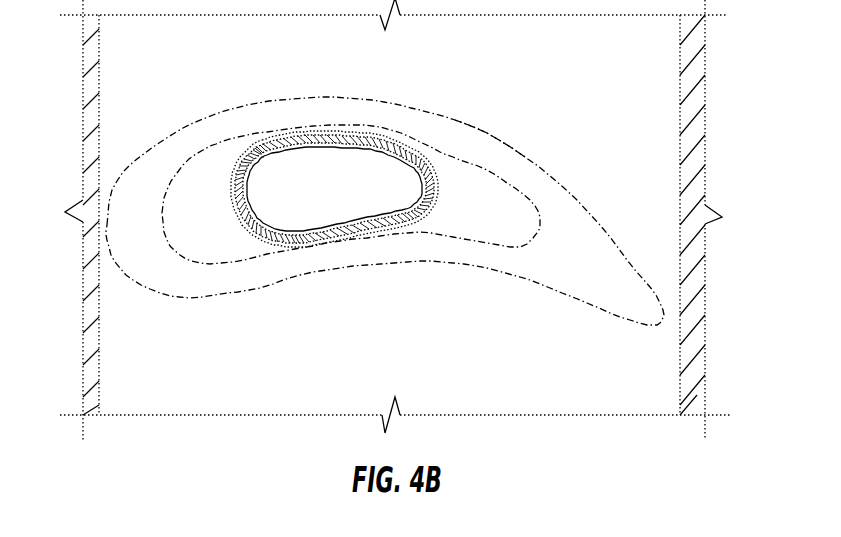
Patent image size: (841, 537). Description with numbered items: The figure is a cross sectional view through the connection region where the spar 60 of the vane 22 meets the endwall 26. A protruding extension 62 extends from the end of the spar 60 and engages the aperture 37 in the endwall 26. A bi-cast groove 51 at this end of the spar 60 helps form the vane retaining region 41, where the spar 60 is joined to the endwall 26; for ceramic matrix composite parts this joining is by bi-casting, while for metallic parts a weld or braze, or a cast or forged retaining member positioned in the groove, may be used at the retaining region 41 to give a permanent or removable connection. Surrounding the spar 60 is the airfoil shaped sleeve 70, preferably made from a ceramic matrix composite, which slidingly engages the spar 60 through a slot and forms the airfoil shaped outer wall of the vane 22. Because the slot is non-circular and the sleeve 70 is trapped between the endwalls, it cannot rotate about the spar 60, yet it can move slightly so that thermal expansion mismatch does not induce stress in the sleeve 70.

The vane 22 is at (298, 276).
The second endwall 26 is at (705, 93).
The aperture 37 is at (380, 140).
The retaining region 41 is at (282, 143).
The bi-cast groove 51 is at (327, 133).
The spar 60 is at (507, 183).
The extension 62 is at (438, 188).
The airfoil shaped sleeve 70 is at (490, 137).